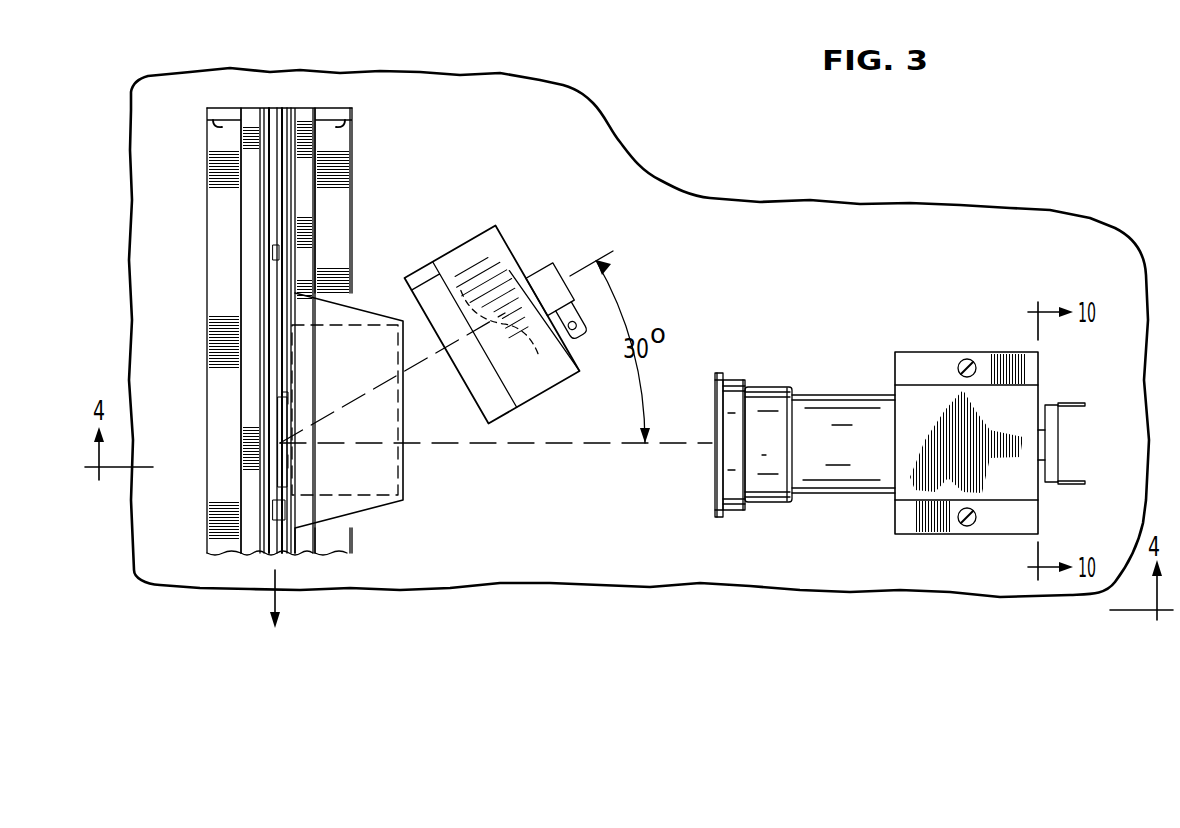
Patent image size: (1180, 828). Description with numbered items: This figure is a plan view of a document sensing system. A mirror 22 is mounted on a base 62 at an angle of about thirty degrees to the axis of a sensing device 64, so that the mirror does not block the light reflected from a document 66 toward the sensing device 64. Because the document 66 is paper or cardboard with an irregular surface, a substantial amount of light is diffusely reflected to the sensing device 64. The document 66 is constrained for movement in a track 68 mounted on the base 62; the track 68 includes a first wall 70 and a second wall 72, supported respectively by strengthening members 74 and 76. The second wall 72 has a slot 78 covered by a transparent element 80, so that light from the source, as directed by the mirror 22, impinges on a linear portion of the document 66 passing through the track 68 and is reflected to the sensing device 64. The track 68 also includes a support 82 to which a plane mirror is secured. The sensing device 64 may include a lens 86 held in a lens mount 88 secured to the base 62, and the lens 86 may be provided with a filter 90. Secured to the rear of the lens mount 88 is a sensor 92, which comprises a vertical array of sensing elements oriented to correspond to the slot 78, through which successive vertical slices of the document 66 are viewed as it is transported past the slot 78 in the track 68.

The mirror 22 is at (518, 232).
The base 62 is at (583, 118).
The sensing device 64 is at (792, 458).
The document 66 is at (277, 262).
The track 68 is at (278, 90).
The first wall 70 is at (262, 203).
The second wall 72 is at (298, 203).
The strengthening member 74 is at (222, 126).
The strengthening member 76 is at (340, 126).
The slot 78 is at (283, 400).
The transparent element 80 is at (290, 460).
The support 82 is at (383, 503).
The lens 86 is at (835, 400).
The lens mount 88 is at (930, 357).
The filter 90 is at (718, 518).
The sensor 92 is at (1058, 455).